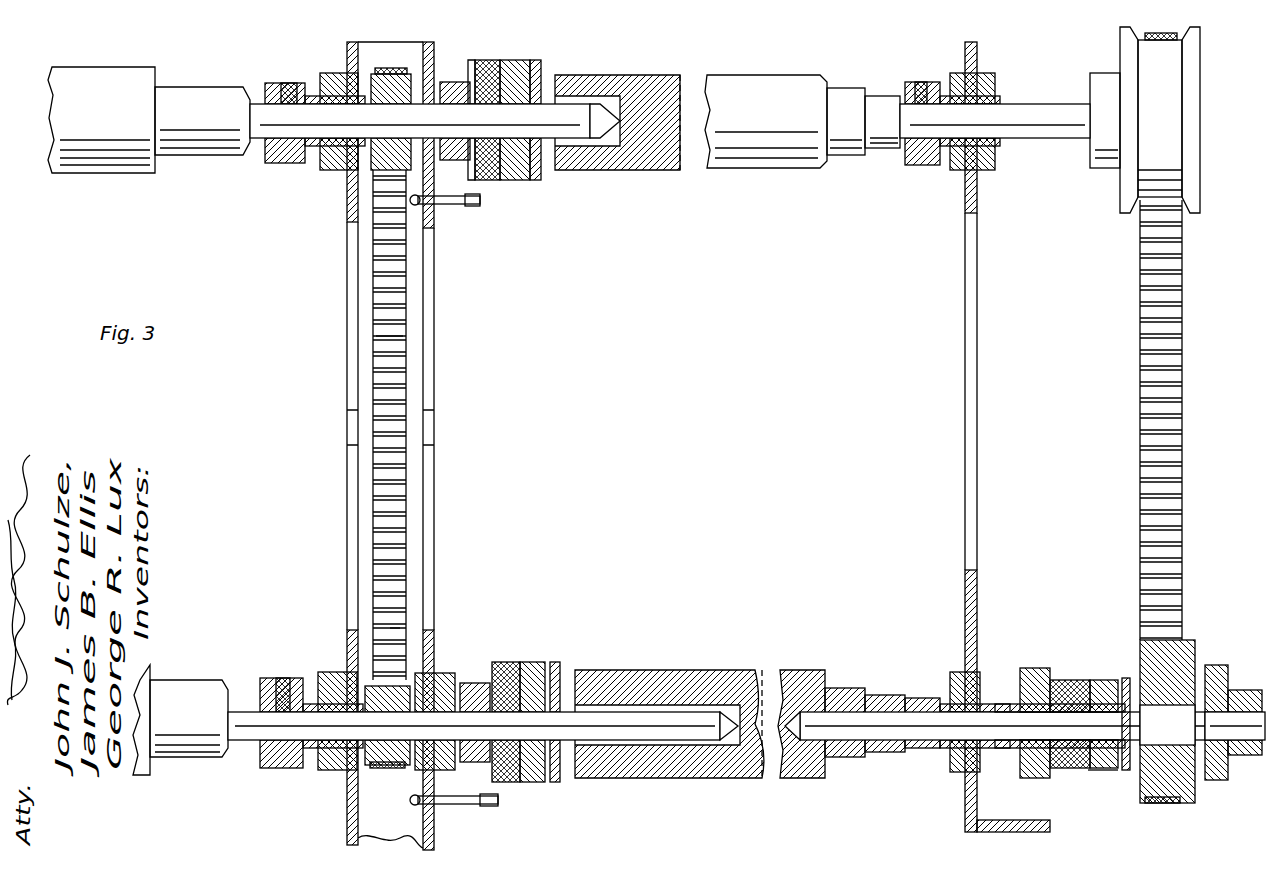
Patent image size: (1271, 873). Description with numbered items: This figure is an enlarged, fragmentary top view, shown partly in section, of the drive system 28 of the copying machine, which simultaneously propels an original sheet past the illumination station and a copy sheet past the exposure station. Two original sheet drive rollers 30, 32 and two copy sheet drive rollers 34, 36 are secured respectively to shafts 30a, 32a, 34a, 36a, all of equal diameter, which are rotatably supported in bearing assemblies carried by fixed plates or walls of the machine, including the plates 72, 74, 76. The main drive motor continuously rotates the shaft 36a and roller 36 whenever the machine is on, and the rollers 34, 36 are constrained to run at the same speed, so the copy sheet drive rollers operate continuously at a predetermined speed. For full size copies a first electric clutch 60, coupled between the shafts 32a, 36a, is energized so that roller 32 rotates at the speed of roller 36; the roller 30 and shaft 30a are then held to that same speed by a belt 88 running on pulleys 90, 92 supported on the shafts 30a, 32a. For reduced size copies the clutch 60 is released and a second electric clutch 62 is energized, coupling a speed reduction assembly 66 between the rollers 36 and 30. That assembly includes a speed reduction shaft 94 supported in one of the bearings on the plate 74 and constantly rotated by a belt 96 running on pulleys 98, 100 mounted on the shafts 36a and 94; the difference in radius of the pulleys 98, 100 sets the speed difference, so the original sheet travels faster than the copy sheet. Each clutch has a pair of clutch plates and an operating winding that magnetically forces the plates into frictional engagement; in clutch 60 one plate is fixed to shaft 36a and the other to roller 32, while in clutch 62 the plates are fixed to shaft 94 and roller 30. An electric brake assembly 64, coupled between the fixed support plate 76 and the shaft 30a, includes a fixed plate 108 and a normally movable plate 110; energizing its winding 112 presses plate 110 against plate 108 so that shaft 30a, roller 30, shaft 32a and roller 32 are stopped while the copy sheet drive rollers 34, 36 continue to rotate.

The drive system 28 is at (692, 357).
The original sheet drive roller 30 is at (695, 778).
The shaft 30a is at (892, 716).
The original sheet drive roller 32 is at (775, 168).
The shaft 32a is at (1040, 140).
The copy sheet drive roller 34 is at (150, 772).
The shaft 34a is at (240, 712).
The copy sheet drive roller 36 is at (103, 176).
The shaft 36a is at (265, 138).
The first electric clutch 60 is at (526, 132).
The second electric clutch 62 is at (538, 714).
The electric brake assembly 64 is at (1101, 776).
The speed reduction assembly 66 is at (404, 638).
The fixed plate 72 is at (350, 428).
The fixed plate 74 is at (410, 430).
The fixed support plate 76 is at (977, 390).
The belt 88 is at (1184, 428).
The pulley 90 is at (1198, 198).
The pulley 92 is at (1190, 650).
The speed reduction shaft 94 is at (498, 722).
The belt 96 is at (392, 338).
The pulley 98 is at (392, 68).
The pulley 100 is at (390, 748).
The fixed plate 108 is at (1097, 678).
The movable plate 110 is at (1129, 678).
The winding 112 is at (1067, 678).